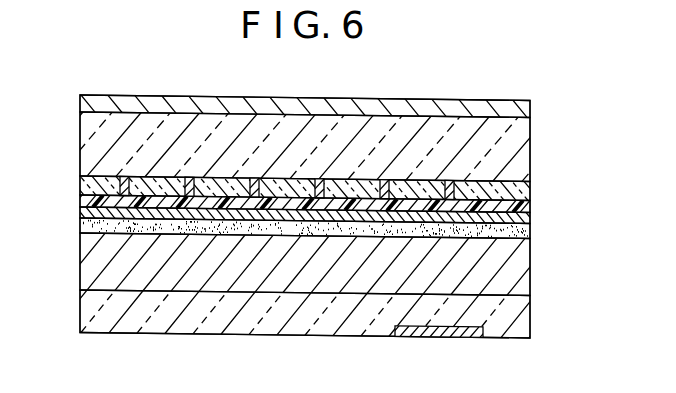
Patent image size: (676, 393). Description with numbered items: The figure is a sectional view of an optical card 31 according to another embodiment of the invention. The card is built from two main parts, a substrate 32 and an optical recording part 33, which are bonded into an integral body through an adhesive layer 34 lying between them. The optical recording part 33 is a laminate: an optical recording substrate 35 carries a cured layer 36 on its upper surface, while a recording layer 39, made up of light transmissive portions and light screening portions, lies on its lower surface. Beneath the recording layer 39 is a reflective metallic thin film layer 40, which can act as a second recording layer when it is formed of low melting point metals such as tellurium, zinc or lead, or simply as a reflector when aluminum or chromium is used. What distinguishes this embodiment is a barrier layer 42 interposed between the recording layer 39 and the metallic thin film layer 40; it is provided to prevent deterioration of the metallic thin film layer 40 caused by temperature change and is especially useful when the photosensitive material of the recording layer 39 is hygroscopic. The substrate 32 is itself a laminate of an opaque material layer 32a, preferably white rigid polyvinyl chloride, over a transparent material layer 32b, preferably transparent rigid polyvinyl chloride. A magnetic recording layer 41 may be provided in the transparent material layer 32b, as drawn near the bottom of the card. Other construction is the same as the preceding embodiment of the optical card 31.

The optical card 31 is at (157, 96).
The substrate 32 is at (70, 233).
The opaque material layer 32a is at (520, 266).
The transparent material layer 32b is at (518, 312).
The optical recording part 33 is at (70, 96).
The adhesive layer 34 is at (525, 226).
The optical recording substrate 35 is at (524, 134).
The cured layer 36 is at (528, 102).
The recording layer 39 is at (538, 178).
The metallic thin film layer 40 is at (530, 210).
The magnetic recording layer 41 is at (446, 336).
The barrier layer 42 is at (525, 202).